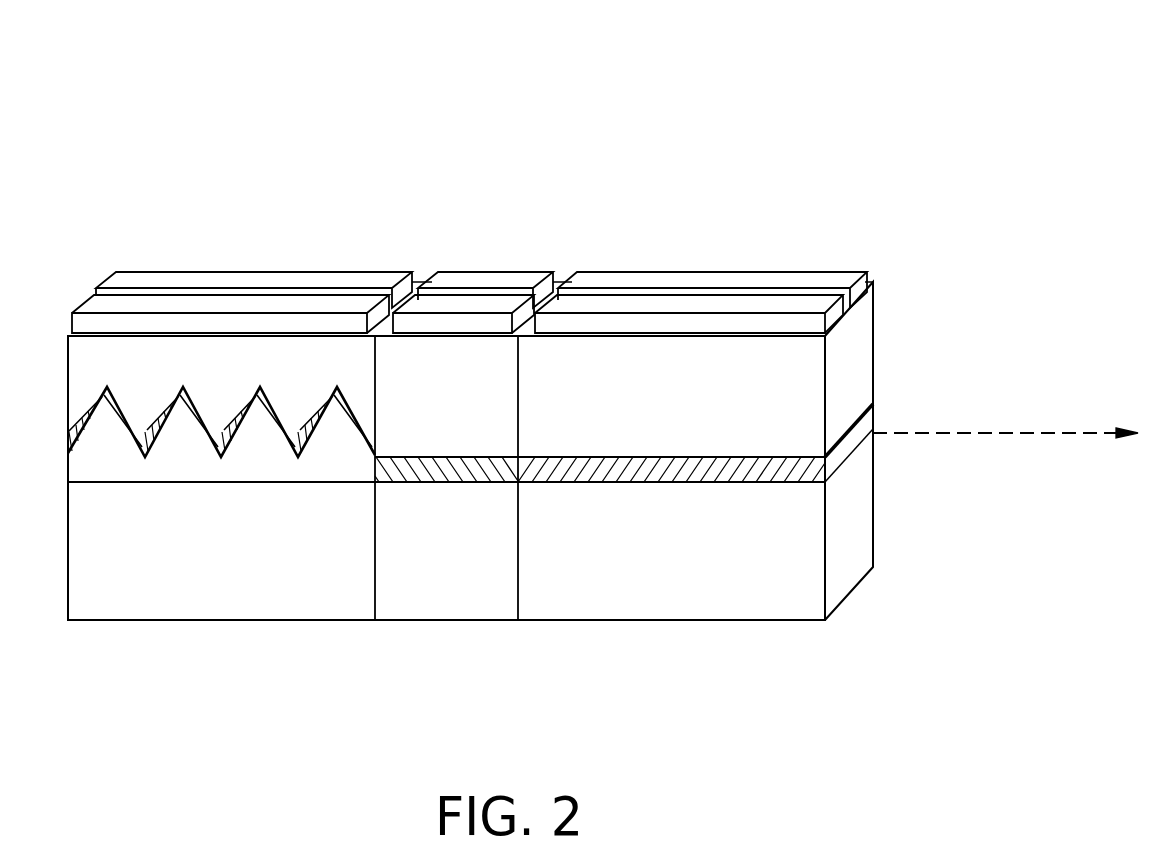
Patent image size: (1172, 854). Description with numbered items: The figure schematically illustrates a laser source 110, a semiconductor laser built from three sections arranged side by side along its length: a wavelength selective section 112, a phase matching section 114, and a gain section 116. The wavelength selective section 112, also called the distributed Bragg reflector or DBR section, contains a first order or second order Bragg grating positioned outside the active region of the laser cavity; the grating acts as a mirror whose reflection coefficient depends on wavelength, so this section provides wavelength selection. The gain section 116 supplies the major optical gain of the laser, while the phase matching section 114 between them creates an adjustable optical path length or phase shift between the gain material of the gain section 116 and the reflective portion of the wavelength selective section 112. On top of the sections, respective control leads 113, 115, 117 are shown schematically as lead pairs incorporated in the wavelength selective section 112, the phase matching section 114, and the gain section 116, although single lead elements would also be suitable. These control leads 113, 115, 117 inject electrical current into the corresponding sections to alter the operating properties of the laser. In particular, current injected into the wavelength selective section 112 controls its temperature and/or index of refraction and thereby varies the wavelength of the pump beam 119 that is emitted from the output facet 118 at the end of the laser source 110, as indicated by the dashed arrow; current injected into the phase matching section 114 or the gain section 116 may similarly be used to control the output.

The laser source 110 is at (628, 155).
The wavelength selective section 112 is at (212, 610).
The control leads 113 is at (212, 303).
The phase matching section 114 is at (443, 610).
The control leads 115 is at (438, 303).
The gain section 116 is at (648, 610).
The control leads 117 is at (675, 303).
The output facet 118 is at (863, 342).
The pump beam 119 is at (1020, 433).